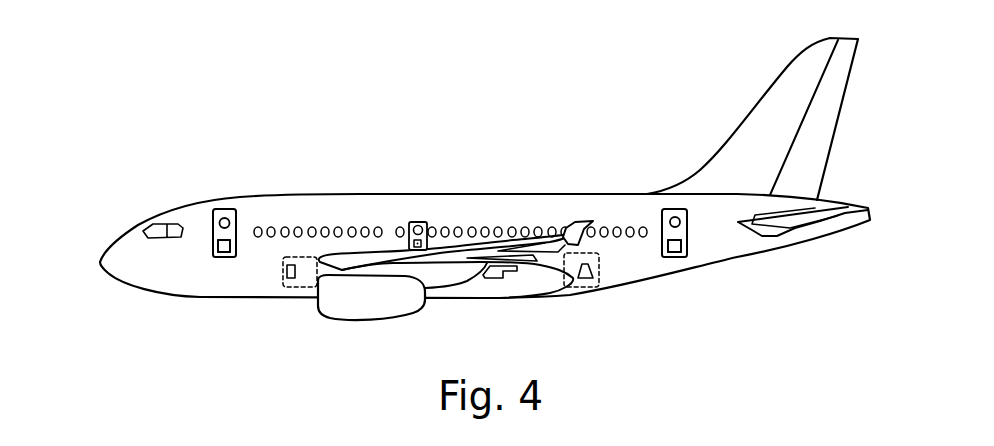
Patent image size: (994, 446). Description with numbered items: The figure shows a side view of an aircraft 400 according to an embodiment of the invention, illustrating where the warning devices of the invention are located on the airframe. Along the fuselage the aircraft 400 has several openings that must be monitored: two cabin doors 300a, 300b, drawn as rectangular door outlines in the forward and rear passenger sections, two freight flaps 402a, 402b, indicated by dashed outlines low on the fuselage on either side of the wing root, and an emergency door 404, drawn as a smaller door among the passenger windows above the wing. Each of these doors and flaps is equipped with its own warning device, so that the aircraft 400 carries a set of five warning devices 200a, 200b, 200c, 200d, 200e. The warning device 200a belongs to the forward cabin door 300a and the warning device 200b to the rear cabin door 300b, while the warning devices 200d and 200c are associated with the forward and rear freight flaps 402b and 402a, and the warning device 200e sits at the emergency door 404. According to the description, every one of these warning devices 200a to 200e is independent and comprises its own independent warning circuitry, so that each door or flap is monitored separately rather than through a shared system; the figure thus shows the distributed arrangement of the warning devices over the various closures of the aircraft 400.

The aircraft 400 is at (648, 174).
The cabin door 300a is at (211, 220).
The cabin door 300b is at (688, 236).
The warning device 200a is at (217, 247).
The warning device 200b is at (676, 257).
The warning device 200c is at (584, 278).
The warning device 200d is at (287, 272).
The warning device 200e is at (410, 228).
The freight flap 402a is at (599, 273).
The freight flap 402b is at (293, 287).
The emergency door 404 is at (420, 221).